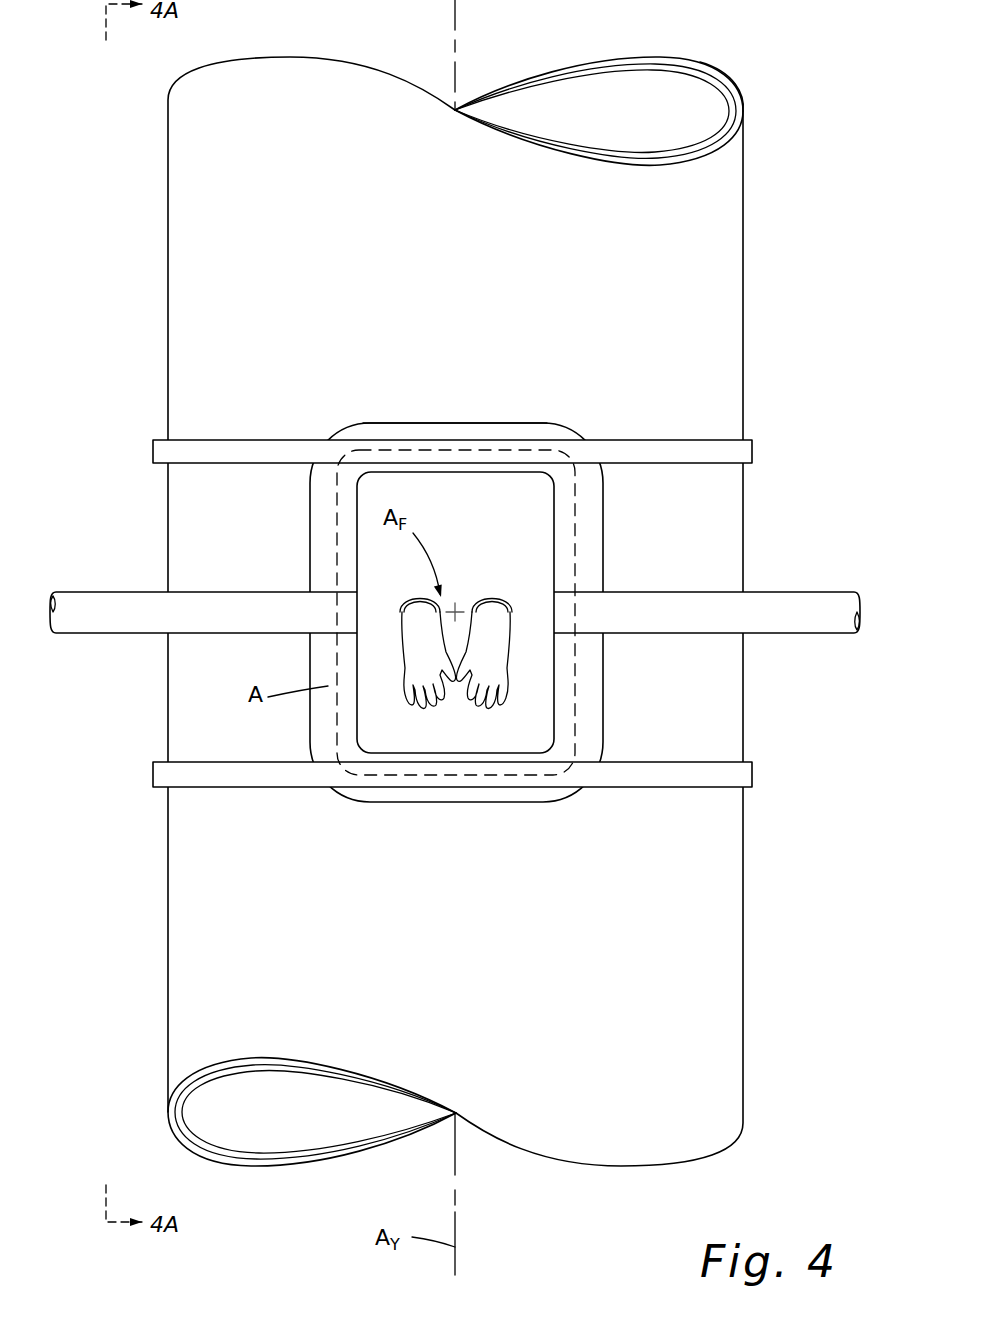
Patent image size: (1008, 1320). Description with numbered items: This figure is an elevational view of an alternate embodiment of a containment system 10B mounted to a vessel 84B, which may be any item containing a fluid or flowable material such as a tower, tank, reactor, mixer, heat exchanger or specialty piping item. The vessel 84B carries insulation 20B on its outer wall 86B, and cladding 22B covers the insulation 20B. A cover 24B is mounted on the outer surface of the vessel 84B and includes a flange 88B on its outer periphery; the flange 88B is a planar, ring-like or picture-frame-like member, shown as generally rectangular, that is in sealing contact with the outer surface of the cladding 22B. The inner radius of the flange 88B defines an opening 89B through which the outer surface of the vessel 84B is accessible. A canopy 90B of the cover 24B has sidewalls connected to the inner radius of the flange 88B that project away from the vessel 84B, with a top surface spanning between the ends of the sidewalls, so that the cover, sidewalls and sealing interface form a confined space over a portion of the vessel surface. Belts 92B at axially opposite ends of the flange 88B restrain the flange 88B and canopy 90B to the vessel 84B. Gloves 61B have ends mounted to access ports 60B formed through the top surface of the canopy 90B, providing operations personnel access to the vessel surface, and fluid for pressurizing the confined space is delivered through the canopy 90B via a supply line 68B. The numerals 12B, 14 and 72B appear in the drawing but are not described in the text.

The containment system 10B is at (775, 552).
The mounting pad 12B is at (576, 419).
The glove holder plate 14 is at (599, 527).
The insulation 20B is at (722, 90).
The cladding 22B is at (690, 62).
The cover 24B is at (447, 390).
The access ports 60B is at (488, 610).
The gloves 61B is at (508, 724).
The supply line 68B is at (812, 636).
The left handle bar 72B is at (92, 636).
The vessel 84B is at (775, 1050).
The outer wall 86B is at (690, 145).
The flange 88B is at (358, 423).
The opening 89B is at (458, 733).
The canopy 90B is at (385, 722).
The belts 92B is at (677, 790).